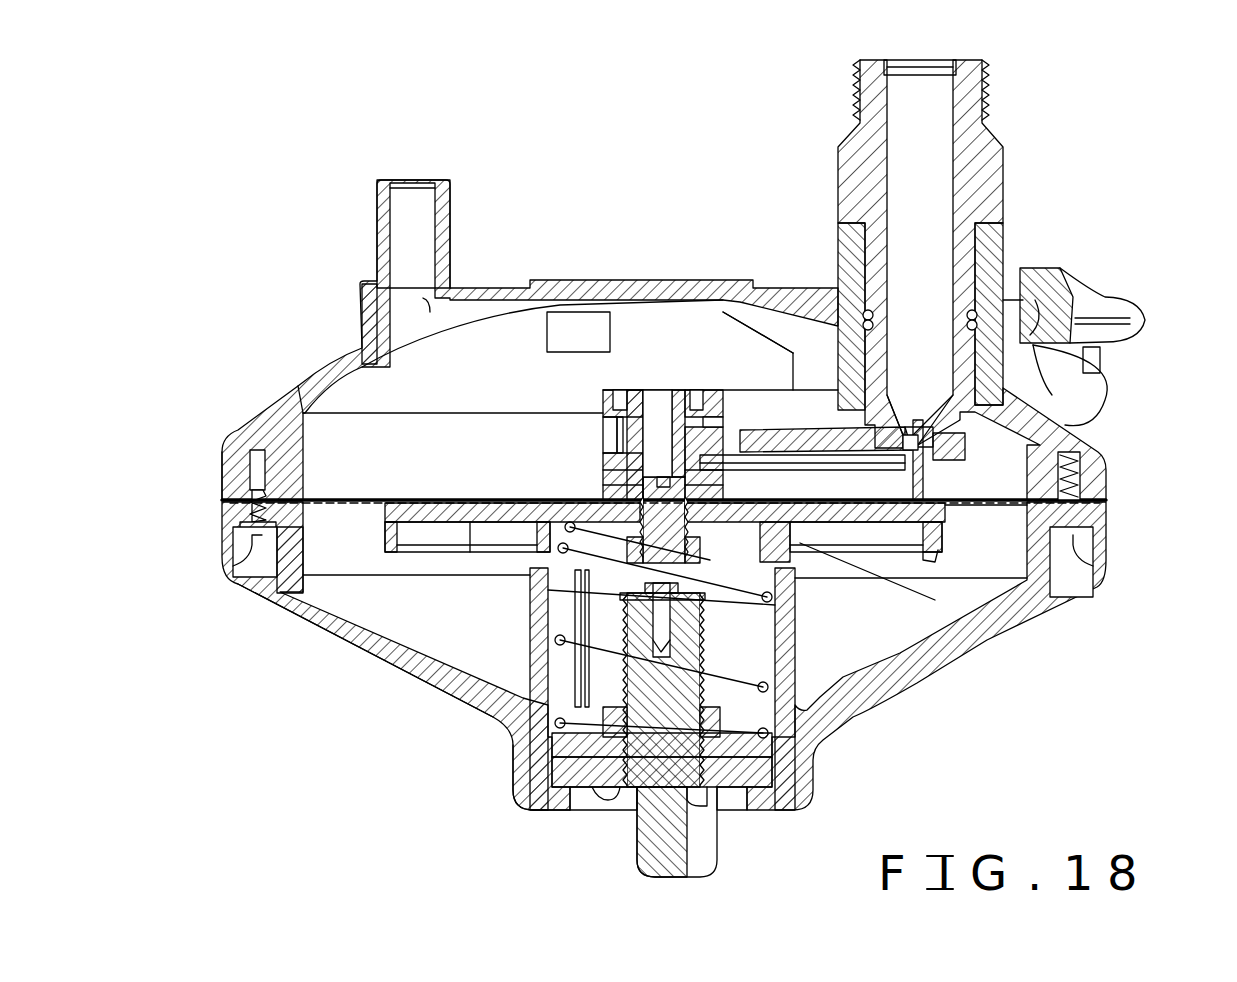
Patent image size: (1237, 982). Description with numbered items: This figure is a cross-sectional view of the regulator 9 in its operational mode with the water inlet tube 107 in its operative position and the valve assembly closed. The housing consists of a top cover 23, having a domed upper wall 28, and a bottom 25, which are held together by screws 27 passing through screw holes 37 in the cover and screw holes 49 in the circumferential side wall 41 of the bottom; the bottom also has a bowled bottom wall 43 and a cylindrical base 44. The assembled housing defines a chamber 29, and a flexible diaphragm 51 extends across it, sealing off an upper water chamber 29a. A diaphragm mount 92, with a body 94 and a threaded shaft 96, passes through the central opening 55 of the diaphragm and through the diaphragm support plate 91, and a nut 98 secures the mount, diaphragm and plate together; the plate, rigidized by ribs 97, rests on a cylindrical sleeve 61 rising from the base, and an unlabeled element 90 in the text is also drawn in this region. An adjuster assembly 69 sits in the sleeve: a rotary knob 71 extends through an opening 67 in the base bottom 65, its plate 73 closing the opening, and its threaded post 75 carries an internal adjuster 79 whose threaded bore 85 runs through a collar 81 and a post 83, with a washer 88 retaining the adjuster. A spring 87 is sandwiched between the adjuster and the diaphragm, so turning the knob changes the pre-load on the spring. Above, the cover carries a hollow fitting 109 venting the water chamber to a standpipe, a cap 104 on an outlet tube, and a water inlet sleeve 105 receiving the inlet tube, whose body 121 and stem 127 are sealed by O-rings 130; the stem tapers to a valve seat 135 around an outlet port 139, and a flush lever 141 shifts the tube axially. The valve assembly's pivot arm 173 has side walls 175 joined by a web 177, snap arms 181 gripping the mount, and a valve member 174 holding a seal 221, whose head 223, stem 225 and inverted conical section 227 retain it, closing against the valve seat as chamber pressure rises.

The regulator 9 is at (660, 226).
The top cover 23 is at (530, 340).
The bottom 25 is at (628, 663).
The screws 27 is at (247, 540).
The domed upper wall 28 is at (302, 381).
The chamber 29 is at (228, 468).
The upper water chamber 29a is at (362, 290).
The screw holes 37 is at (252, 452).
The circumferential side wall 41 is at (226, 527).
The bowled bottom wall 43 is at (424, 680).
The cylindrical base 44 is at (510, 775).
The screw holes 49 is at (250, 582).
The flexible diaphragm 51 is at (343, 500).
The central opening 55 is at (725, 496).
The cylindrical sleeve 61 is at (797, 632).
The bottom 65 is at (566, 813).
The opening 67 is at (738, 813).
The adjuster assembly 69 is at (705, 650).
The rotary knob 71 is at (703, 866).
The plate 73 is at (592, 787).
The threaded post 75 is at (692, 632).
The internal adjuster 79 is at (597, 700).
The collar 81 is at (815, 773).
The post 83 is at (760, 713).
The threaded bore 85 is at (627, 703).
The spring 87 is at (797, 606).
The washer 88 is at (627, 583).
The diaphragm plate 90 is at (600, 505).
The diaphragm support plate 91 is at (933, 527).
The diaphragm mount 92 is at (600, 394).
The body 94 is at (602, 404).
The threaded shaft 96 is at (600, 434).
The ribs 97 is at (790, 537).
The nut 98 is at (530, 553).
The cap 104 is at (1100, 384).
The water inlet sleeve 105 is at (1010, 246).
The water inlet tube 107 is at (992, 128).
The fitting 109 is at (452, 236).
The body 121 is at (1004, 190).
The stem 127 is at (838, 261).
The O-rings 130 is at (1022, 273).
The valve seat 135 is at (1000, 403).
The outlet port 139 is at (920, 418).
The flush lever 141 is at (1133, 310).
The pivot arm 173 is at (748, 428).
The valve member 174 is at (975, 447).
The side walls 175 is at (770, 392).
The web 177 is at (772, 437).
The snap arms 181 is at (603, 466).
The seal 221 is at (905, 468).
The head 223 is at (1000, 440).
The stem 225 is at (1000, 502).
The inverted conical section 227 is at (930, 472).